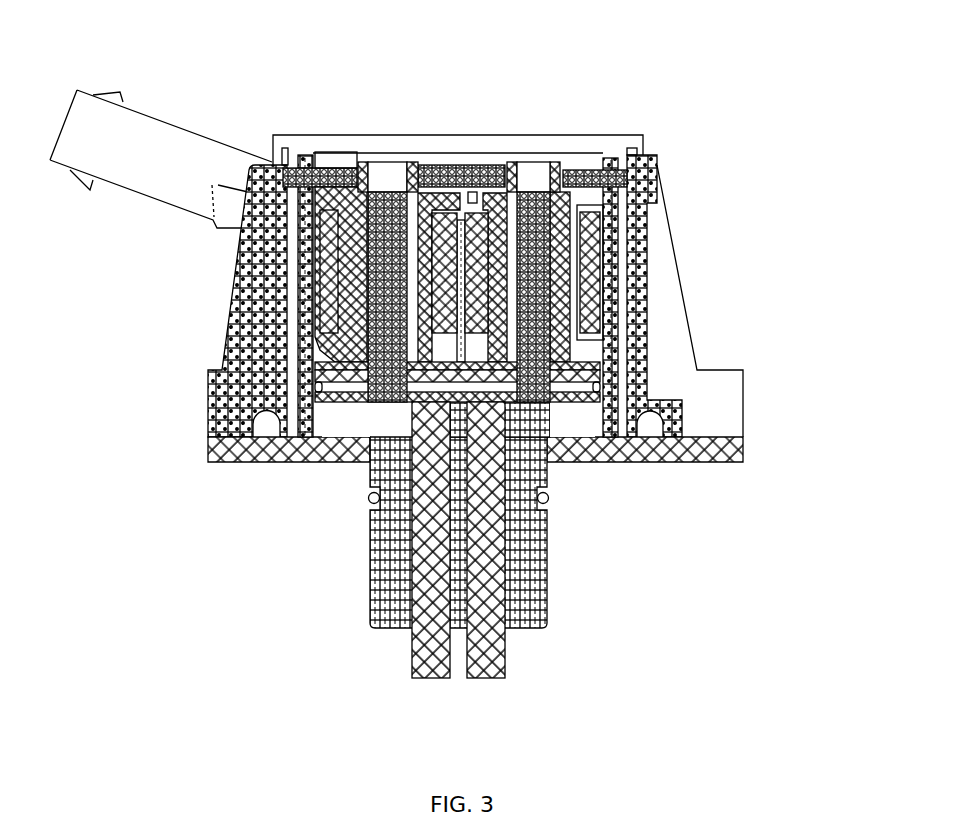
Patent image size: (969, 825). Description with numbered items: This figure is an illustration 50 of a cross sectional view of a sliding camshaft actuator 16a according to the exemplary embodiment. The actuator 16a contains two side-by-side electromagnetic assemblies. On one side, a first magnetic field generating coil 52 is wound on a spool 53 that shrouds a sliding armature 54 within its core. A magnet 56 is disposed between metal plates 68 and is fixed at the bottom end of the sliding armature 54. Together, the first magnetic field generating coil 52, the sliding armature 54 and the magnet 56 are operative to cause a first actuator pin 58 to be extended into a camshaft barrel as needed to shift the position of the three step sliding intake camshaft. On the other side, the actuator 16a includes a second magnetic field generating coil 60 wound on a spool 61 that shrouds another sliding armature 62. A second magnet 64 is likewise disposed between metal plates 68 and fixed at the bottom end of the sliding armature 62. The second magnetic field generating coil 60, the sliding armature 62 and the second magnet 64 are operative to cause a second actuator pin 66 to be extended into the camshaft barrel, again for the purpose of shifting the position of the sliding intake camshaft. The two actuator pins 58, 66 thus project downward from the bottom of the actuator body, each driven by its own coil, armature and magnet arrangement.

The sliding camshaft actuator 16a is at (155, 107).
The illustration 50 is at (783, 82).
The first magnetic field generating coil 52 is at (328, 290).
The spool 53 is at (413, 202).
The sliding armature 54 is at (373, 190).
The magnet 56 is at (315, 387).
The first actuator pin 58 is at (428, 655).
The second magnetic field generating coil 60 is at (480, 218).
The spool 61 is at (562, 200).
The sliding armature 62 is at (533, 387).
The second magnet 64 is at (602, 387).
The second actuator pin 66 is at (492, 655).
The metal plates 68 is at (313, 368).